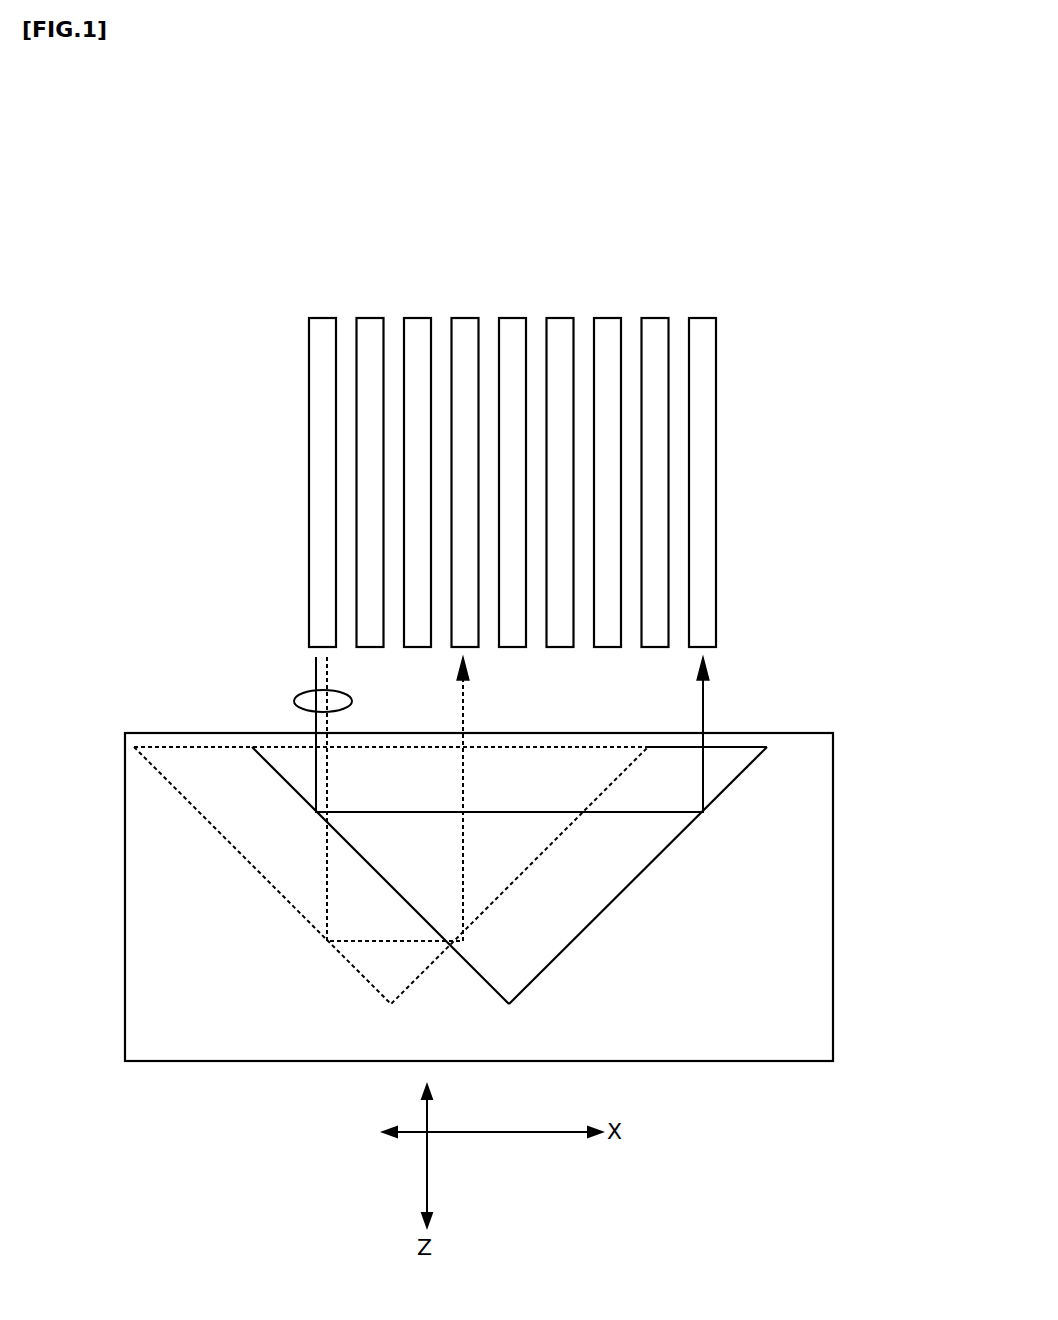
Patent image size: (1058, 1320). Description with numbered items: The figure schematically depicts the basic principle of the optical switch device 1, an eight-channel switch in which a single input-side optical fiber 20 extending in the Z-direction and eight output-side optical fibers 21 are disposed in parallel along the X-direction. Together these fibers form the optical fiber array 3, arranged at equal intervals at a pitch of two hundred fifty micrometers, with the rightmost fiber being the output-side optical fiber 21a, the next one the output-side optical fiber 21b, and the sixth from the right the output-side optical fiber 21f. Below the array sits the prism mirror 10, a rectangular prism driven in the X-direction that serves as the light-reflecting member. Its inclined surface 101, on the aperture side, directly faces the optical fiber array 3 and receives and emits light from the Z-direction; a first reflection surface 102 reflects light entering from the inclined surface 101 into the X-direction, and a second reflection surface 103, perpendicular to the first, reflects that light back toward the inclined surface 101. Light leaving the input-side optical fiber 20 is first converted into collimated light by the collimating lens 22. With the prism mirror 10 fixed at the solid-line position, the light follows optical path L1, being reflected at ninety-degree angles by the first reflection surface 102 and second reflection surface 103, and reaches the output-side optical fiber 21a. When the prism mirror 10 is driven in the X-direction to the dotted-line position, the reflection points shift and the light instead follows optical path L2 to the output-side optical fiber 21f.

The optical switch device 1 is at (864, 895).
The optical fiber array 3 is at (764, 473).
The prism mirror 10 is at (620, 922).
The inclined surface 101 is at (697, 748).
The first reflection surface 102 is at (295, 792).
The second reflection surface 103 is at (648, 867).
The input-side optical fiber 20 is at (309, 515).
The output-side optical fibers 21 is at (708, 238).
The output-side optical fiber 21a is at (704, 318).
The output-side optical fiber 21b is at (648, 318).
The output-side optical fiber 21f is at (462, 318).
The collimating lens 22 is at (295, 700).
The optical path L1 is at (668, 813).
The optical path L2 is at (327, 887).